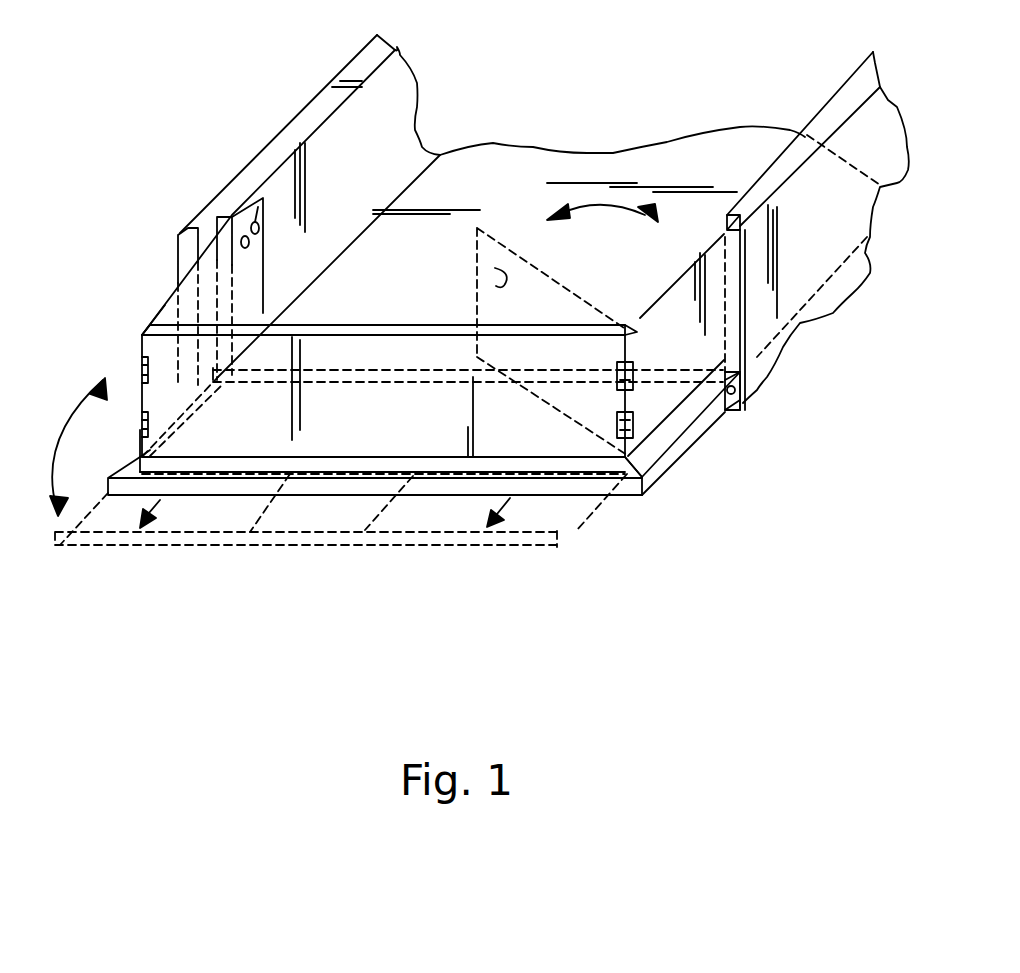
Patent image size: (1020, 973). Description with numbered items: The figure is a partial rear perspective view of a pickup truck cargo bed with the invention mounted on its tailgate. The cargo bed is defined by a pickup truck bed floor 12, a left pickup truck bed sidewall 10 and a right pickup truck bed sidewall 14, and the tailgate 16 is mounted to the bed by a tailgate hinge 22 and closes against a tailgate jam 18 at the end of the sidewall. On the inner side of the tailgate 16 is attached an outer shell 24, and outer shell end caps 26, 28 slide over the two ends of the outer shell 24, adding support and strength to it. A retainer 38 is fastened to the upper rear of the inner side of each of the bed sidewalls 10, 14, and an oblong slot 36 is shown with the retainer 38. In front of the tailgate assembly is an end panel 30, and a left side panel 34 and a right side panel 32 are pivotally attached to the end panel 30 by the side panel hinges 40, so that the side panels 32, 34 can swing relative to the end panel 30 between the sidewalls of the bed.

The left pickup truck bed sidewall 10 is at (337, 153).
The pickup truck bed floor 12 is at (483, 180).
The right pickup truck bed sidewall 14 is at (807, 193).
The tailgate 16 is at (690, 433).
The tailgate jam 18 is at (205, 235).
The tailgate hinge 22 is at (735, 410).
The outer shell 24 is at (557, 443).
The end cap 26 is at (640, 447).
The end cap 28 is at (140, 441).
The end panel 30 is at (368, 330).
The right side panel 32 is at (656, 333).
The left side panel 34 is at (170, 315).
The oblong slot 36 is at (245, 228).
The retainer 38 is at (257, 207).
The side panel hinge 40 is at (143, 420).